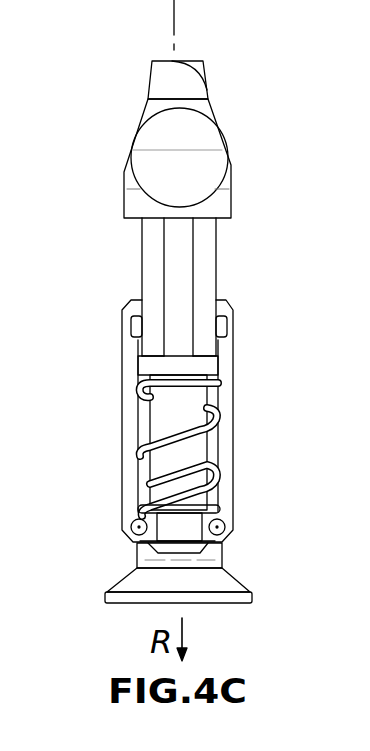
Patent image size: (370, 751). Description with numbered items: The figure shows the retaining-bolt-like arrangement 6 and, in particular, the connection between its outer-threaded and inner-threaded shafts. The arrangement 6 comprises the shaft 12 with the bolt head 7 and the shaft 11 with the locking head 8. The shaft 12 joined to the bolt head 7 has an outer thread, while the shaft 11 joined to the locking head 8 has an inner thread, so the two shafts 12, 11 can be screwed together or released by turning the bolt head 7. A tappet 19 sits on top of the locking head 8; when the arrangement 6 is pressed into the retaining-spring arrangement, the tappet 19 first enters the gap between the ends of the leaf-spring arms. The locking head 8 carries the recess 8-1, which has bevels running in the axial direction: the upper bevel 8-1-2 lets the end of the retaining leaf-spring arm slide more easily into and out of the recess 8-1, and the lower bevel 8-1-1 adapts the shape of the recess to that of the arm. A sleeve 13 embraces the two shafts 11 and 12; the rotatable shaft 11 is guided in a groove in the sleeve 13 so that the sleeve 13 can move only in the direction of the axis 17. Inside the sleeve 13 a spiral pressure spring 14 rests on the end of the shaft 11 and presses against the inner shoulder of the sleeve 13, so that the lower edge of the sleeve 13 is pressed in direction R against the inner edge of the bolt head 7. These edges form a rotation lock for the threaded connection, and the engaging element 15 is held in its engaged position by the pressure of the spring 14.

The retaining-bolt-like arrangement 6 is at (104, 296).
The bolt head 7 is at (212, 582).
The locking head 8 is at (167, 156).
The recess 8-1 is at (215, 160).
The lower bevel 8-1-1 is at (143, 167).
The upper bevel 8-1-2 is at (148, 127).
The shaft 11 is at (205, 281).
The shaft 12 is at (193, 443).
The sleeve 13 is at (226, 393).
The spiral pressure spring 14 is at (220, 430).
The engaging element 15 is at (208, 546).
The axis 17 is at (182, 18).
The tappet 19 is at (157, 73).